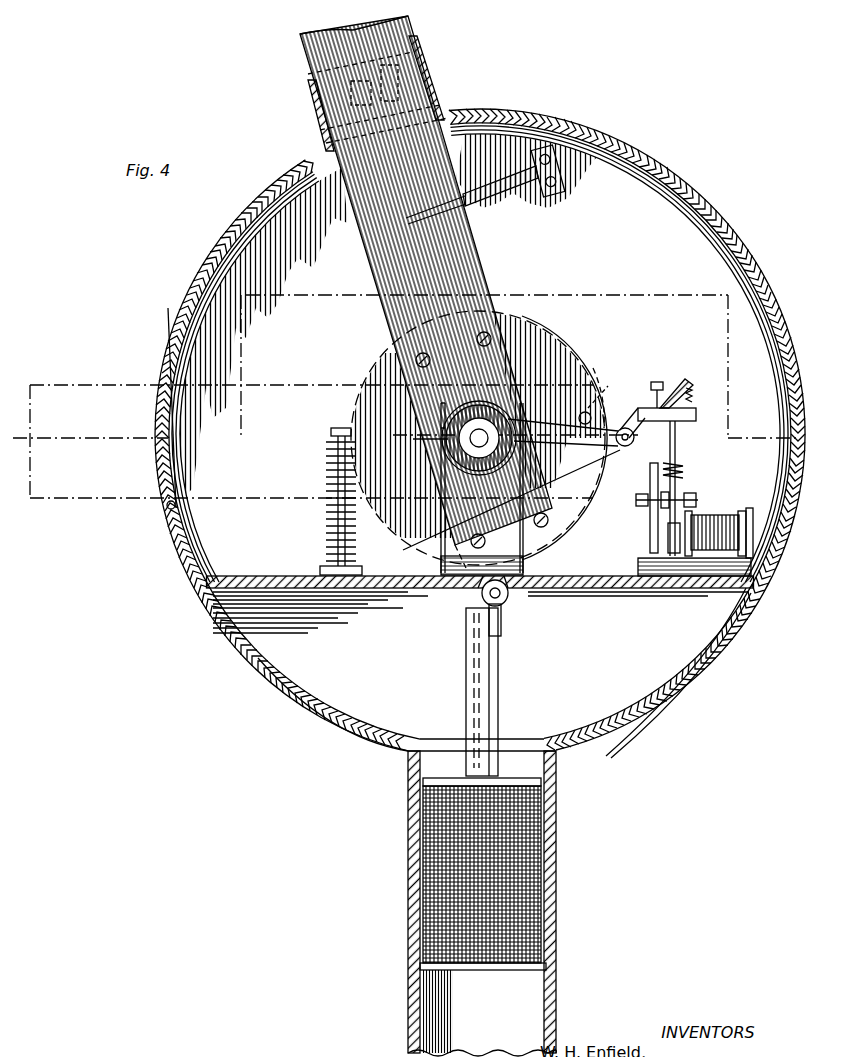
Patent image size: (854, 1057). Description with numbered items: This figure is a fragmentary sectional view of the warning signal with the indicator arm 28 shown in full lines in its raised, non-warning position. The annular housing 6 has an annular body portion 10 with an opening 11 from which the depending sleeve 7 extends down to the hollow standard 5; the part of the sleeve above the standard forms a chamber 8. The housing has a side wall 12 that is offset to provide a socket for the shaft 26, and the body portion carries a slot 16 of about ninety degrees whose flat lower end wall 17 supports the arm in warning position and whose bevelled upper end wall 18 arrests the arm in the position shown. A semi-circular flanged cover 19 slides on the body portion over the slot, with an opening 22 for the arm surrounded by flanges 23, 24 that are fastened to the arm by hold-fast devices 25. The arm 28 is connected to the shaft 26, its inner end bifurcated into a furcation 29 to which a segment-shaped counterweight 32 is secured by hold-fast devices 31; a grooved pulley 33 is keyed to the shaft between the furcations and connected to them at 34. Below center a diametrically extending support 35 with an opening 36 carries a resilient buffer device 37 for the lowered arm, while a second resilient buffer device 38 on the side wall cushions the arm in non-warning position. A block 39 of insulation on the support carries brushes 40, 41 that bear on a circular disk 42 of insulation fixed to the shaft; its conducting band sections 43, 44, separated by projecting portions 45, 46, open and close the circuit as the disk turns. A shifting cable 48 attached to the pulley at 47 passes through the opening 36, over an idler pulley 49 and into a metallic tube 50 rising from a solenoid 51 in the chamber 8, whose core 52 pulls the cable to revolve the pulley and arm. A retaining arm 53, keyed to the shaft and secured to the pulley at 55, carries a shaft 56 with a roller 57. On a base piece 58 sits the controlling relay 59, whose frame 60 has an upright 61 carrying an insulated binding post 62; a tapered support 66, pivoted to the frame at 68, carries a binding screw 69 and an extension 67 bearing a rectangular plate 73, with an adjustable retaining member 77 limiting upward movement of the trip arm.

The standard 5 is at (405, 396).
The annular housing 6 is at (232, 650).
The depending sleeve 7 is at (550, 900).
The chamber 8 is at (540, 975).
The annular body portion 10 is at (655, 700).
The opening 11 is at (535, 740).
The side wall 12 is at (360, 700).
The slot 16 is at (224, 236).
The lower end wall of the slot 17 is at (160, 503).
The upper end wall of the slot 18 is at (448, 108).
The semi-circular flanged cover 19 is at (268, 180).
The opening 22 is at (316, 142).
The flange 23 is at (408, 46).
The flange 24 is at (300, 70).
The hold-fast devices 25 is at (425, 63).
The shaft 26 is at (418, 438).
The indicator arm 28 is at (458, 240).
The furcation 29 is at (500, 325).
The hold-fast devices 31 is at (477, 531).
The segment-shaped counterweight 32 is at (556, 540).
The grooved pulley 33 is at (570, 360).
The connecting means 34 is at (470, 338).
The support 35 is at (480, 604).
The opening 36 is at (466, 592).
The resilient buffer device 37 is at (320, 515).
The resilient buffer device 38 is at (490, 172).
The block of insulation 39 is at (440, 580).
The brush 40 is at (432, 500).
The brush 41 is at (516, 470).
The circular disk of insulation 42 is at (478, 394).
The band section 43 is at (493, 402).
The band section 44 is at (466, 422).
The projecting portion 45 is at (432, 400).
The projecting portion 46 is at (563, 436).
The cable connection 47 is at (590, 384).
The shifting cable 48 is at (580, 498).
The idler pulley 49 is at (500, 590).
The metallic tube 50 is at (491, 683).
The solenoid 51 is at (400, 840).
The core 52 is at (500, 742).
The arm 53 is at (598, 405).
The securing point 55 is at (575, 413).
The shaft 56 is at (617, 439).
The roller 57 is at (626, 440).
The base piece 58 is at (635, 558).
The controlling relay 59 is at (706, 507).
The frame 60 is at (745, 512).
The upright 61 is at (642, 485).
The binding post 62 is at (657, 500).
The vertically disposed support 66 is at (674, 457).
The extension 67 is at (662, 488).
The pivot connection 68 is at (669, 540).
The binding screw 69 is at (684, 493).
The rectangular plate 73 is at (642, 402).
The adjustable retaining member 77 is at (670, 385).